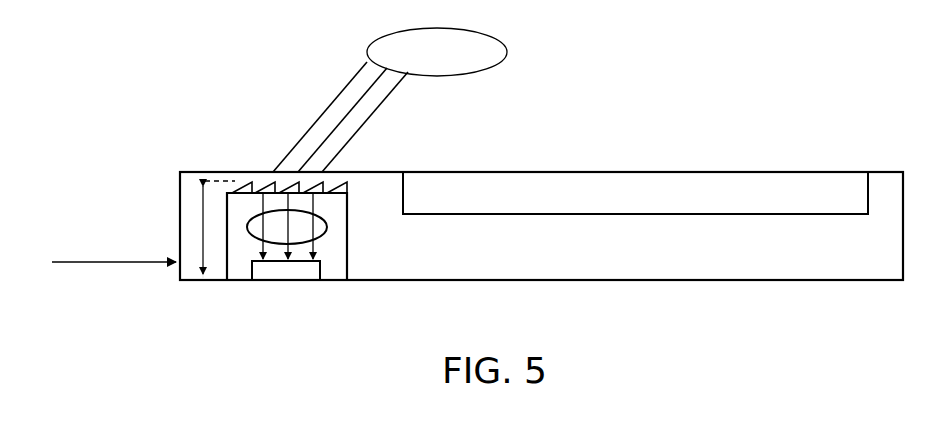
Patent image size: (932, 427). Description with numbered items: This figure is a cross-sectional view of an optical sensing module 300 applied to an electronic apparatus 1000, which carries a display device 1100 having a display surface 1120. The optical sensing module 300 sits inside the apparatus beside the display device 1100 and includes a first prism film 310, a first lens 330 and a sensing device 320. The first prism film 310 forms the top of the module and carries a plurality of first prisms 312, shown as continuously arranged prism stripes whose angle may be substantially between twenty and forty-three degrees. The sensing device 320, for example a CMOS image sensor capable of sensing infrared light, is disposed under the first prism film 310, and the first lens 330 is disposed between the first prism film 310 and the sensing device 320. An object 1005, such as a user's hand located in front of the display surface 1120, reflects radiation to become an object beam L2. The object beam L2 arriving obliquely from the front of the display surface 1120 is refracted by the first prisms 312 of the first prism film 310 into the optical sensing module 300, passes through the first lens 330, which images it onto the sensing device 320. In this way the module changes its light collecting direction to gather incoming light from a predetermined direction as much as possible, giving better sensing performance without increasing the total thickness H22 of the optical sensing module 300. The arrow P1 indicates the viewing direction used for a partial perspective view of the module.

The electronic apparatus 1000 is at (752, 282).
The display surface 1120 is at (612, 170).
The display device 1100 is at (572, 187).
The optical sensing module 300 is at (357, 243).
The first prism 312 is at (243, 181).
The first prism film 310 is at (236, 175).
The first lens 330 is at (257, 240).
The sensing device 320 is at (313, 283).
The object beam L2 is at (357, 130).
The object 1005 is at (507, 52).
The total thickness H22 is at (202, 228).
The direction P1 is at (120, 264).